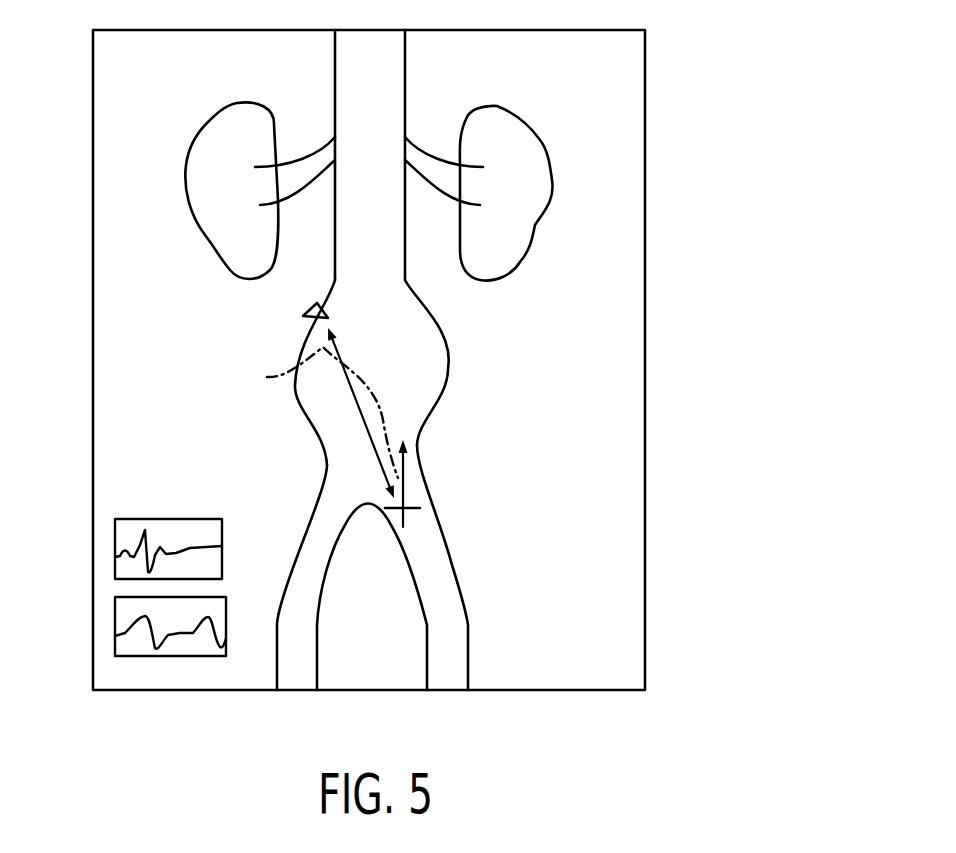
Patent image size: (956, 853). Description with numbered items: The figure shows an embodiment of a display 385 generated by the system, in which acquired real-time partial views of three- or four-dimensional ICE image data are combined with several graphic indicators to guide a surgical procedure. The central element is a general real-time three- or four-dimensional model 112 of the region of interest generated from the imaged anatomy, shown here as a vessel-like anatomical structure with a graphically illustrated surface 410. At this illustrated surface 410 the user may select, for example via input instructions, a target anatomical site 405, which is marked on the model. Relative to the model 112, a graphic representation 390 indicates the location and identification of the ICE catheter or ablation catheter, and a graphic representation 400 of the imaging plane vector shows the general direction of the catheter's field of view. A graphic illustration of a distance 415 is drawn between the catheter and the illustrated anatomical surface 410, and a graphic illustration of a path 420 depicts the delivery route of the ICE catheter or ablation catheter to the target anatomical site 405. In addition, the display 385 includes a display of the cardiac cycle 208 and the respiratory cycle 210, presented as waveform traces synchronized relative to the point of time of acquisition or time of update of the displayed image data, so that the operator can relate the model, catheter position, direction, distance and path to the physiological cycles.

The display 385 is at (645, 135).
The 3D or 4D model 112 is at (404, 360).
The graphically illustrated surface 410 is at (317, 425).
The target anatomical site 405 is at (328, 318).
The distance 415 is at (380, 460).
The path 420 is at (307, 412).
The graphic representation of the imaging plane vector 400 is at (398, 473).
The graphic representation of catheter location 390 is at (413, 510).
The cardiac cycle display 208 is at (115, 566).
The respiratory cycle display 210 is at (109, 650).